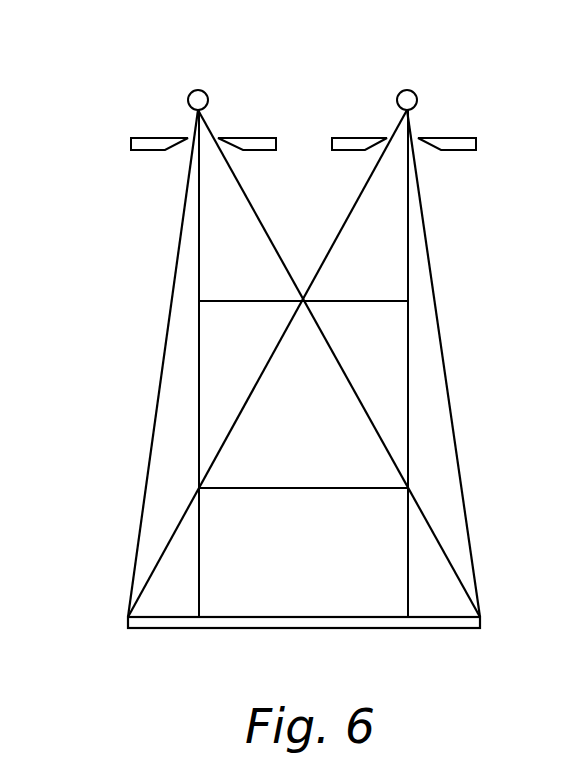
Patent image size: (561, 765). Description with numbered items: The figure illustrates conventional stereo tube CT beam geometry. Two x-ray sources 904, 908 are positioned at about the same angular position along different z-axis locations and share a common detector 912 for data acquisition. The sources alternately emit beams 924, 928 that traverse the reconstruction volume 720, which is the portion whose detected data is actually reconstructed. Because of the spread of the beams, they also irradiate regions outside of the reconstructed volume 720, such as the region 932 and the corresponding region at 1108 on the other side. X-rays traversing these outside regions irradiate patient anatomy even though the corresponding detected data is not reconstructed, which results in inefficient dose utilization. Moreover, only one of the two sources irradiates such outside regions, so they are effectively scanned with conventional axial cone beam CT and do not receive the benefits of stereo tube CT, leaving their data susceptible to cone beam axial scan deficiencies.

The x-ray source 904 is at (199, 100).
The x-ray source 908 is at (406, 100).
The beam 924 is at (181, 243).
The beam 928 is at (429, 250).
The region outside reconstructed volume 932 is at (173, 455).
The second diagonal brace 1108 is at (437, 455).
The reconstruction volume 720 is at (317, 459).
The detector 912 is at (313, 623).